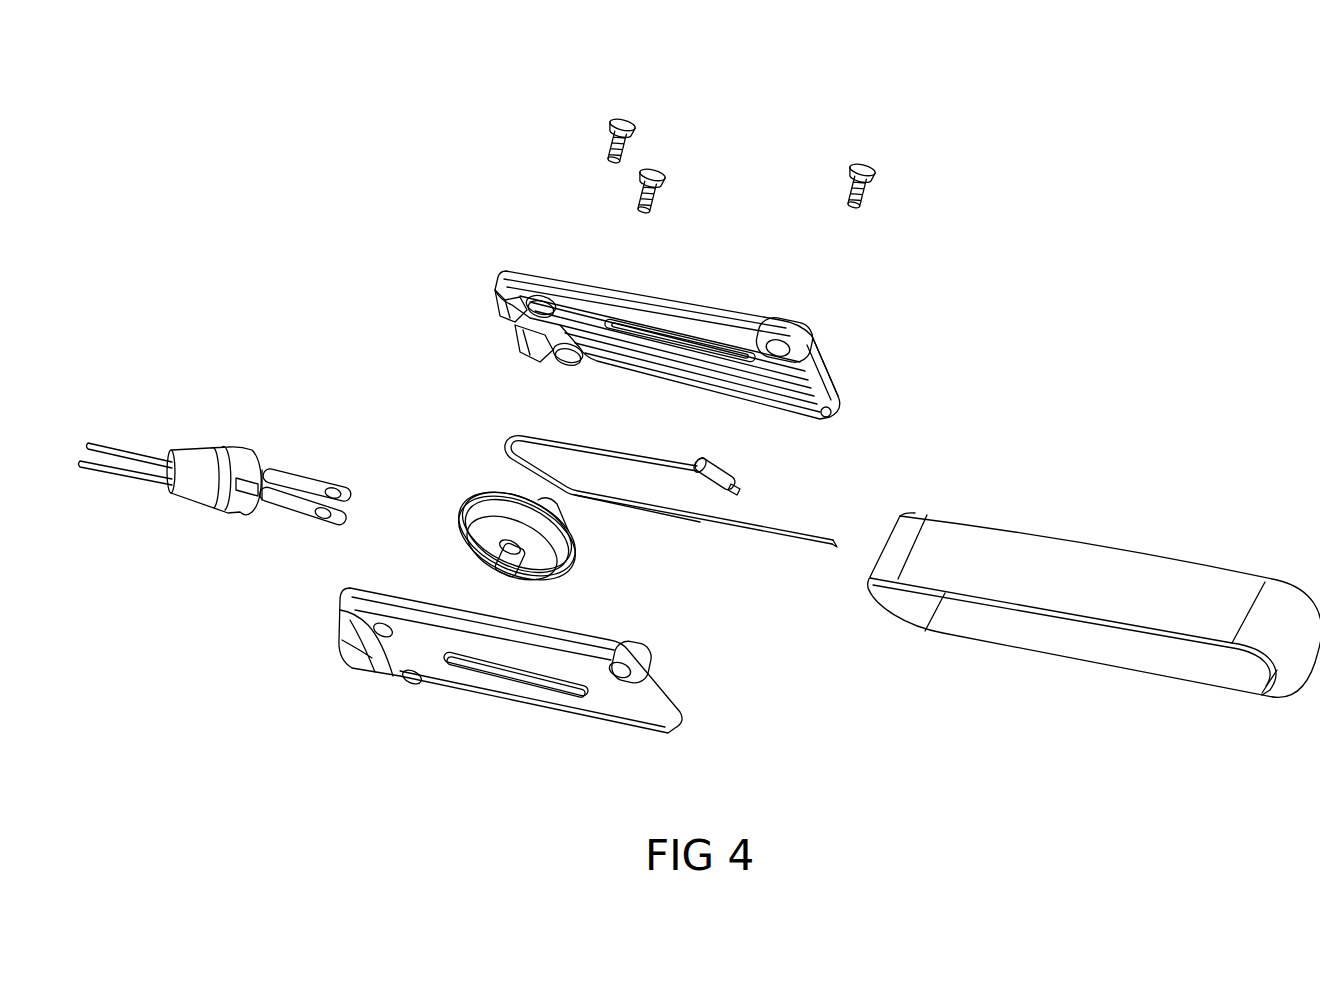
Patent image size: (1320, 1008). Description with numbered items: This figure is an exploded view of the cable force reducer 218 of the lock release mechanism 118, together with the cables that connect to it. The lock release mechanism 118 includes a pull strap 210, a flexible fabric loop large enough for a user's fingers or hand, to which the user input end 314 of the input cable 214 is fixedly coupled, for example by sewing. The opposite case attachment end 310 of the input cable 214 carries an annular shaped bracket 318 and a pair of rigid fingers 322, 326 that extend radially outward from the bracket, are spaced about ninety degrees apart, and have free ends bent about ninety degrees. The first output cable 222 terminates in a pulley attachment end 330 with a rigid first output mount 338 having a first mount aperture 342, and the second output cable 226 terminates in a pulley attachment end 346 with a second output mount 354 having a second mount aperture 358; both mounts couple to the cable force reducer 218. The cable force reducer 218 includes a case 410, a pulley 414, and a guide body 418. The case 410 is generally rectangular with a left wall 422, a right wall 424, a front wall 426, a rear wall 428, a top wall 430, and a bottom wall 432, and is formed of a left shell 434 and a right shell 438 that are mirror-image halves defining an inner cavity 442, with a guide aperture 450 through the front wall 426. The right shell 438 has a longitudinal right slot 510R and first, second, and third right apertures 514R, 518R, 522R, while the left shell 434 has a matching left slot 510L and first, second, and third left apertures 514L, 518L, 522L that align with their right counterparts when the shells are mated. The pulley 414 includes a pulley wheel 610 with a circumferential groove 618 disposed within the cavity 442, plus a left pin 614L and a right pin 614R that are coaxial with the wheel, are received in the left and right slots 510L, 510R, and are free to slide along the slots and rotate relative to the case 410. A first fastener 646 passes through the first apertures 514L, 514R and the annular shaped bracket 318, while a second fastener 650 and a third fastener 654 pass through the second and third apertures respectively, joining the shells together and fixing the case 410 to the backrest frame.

The lock release mechanism 118 is at (380, 128).
The pull strap 210 is at (1135, 582).
The input cable 214 is at (832, 540).
The cable force reducer 218 is at (415, 768).
The first output cable 222 is at (97, 445).
The second output cable 226 is at (86, 466).
The case attachment end 310 is at (699, 524).
The user input end 314 is at (836, 548).
The annular shaped bracket 318 is at (724, 494).
The finger 322 is at (702, 460).
The finger 326 is at (740, 487).
The pulley attachment end 330 is at (318, 495).
The first output mount 338 is at (311, 480).
The first mount aperture 342 is at (342, 506).
The pulley attachment end 346 is at (248, 496).
The second output mount 354 is at (303, 522).
The second mount aperture 358 is at (321, 518).
The case 410 is at (677, 330).
The pulley 414 is at (492, 500).
The guide body 418 is at (188, 502).
The left wall 422 is at (507, 672).
The right wall 424 is at (605, 332).
The front wall 426 is at (518, 342).
The rear wall 428 is at (840, 388).
The top wall 430 is at (598, 300).
The bottom wall 432 is at (750, 400).
The left shell 434 is at (536, 705).
The right shell 438 is at (665, 293).
The inner cavity 442 is at (768, 335).
The guide aperture 450 is at (512, 318).
The right slot 510R is at (632, 333).
The left slot 510L is at (488, 677).
The first right aperture 514R is at (790, 324).
The first left aperture 514L is at (660, 685).
The second right aperture 518R is at (523, 292).
The second left aperture 518L is at (345, 664).
The third right aperture 522R is at (568, 362).
The third left aperture 522L is at (410, 684).
The pulley wheel 610 is at (524, 520).
The left pin 614L is at (514, 560).
The right pin 614R is at (538, 500).
The groove 618 is at (470, 503).
The first fastener 646 is at (860, 200).
The second fastener 650 is at (650, 204).
The third fastener 654 is at (612, 142).